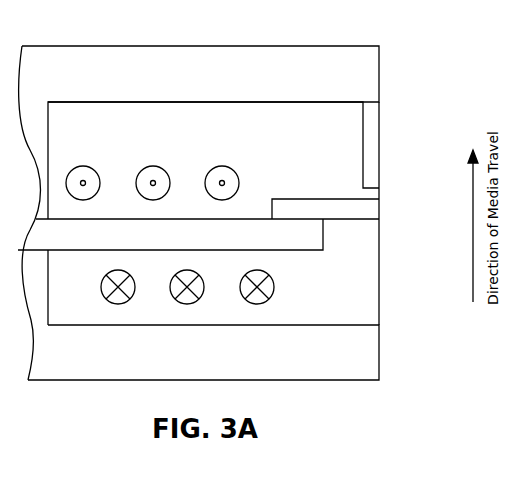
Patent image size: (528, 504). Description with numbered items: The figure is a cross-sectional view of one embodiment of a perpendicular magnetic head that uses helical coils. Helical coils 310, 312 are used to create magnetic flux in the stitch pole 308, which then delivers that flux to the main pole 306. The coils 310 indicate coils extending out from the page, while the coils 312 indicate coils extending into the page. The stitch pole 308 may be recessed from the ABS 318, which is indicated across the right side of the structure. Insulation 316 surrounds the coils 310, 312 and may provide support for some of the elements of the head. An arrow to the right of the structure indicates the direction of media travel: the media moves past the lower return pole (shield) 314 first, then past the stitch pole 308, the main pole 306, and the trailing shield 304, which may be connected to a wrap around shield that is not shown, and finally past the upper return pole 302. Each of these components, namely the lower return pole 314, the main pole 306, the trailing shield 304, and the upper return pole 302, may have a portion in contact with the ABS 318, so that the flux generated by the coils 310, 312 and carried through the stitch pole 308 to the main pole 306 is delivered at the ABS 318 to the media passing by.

The upper return pole 302 is at (253, 85).
The trailing shield 304 is at (380, 149).
The main pole 306 is at (380, 205).
The stitch pole 308 is at (197, 245).
The helical coils extending out from the page 310 is at (83, 166).
The helical coils extending into the page 312 is at (101, 290).
The lower return pole (shield) 314 is at (197, 363).
The insulation 316 is at (292, 155).
The ABS 318 is at (381, 68).